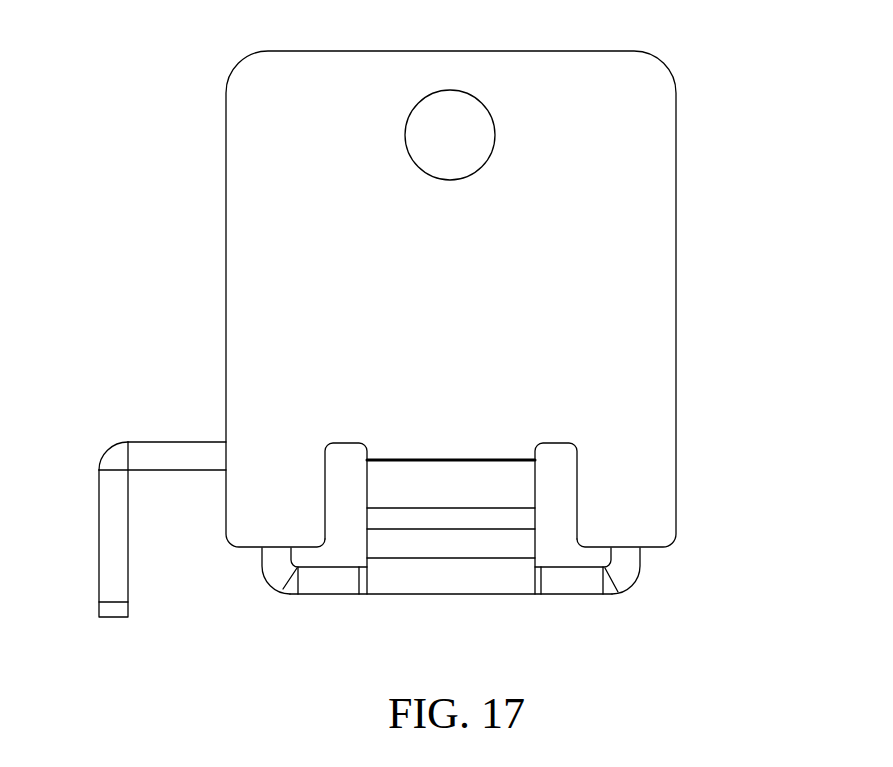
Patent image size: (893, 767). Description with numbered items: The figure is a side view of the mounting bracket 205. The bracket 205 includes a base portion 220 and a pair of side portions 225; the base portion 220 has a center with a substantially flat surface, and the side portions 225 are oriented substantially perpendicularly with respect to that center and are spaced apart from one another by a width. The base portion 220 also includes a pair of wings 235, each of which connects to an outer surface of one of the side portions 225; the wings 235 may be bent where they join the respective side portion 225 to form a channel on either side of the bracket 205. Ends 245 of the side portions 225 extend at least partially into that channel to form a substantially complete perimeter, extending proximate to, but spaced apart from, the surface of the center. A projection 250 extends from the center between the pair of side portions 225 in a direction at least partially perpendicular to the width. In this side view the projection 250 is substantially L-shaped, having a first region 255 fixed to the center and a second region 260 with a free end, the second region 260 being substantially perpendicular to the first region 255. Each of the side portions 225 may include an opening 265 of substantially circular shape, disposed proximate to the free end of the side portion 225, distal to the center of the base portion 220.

The bracket 205 is at (124, 52).
The base portion 220 is at (578, 597).
The side portions 225 is at (618, 303).
The wings 235 is at (457, 483).
The ends 245 is at (247, 488).
The projection 250 is at (120, 498).
The first region 255 is at (180, 458).
The second region 260 is at (108, 547).
The opening 265 is at (495, 135).